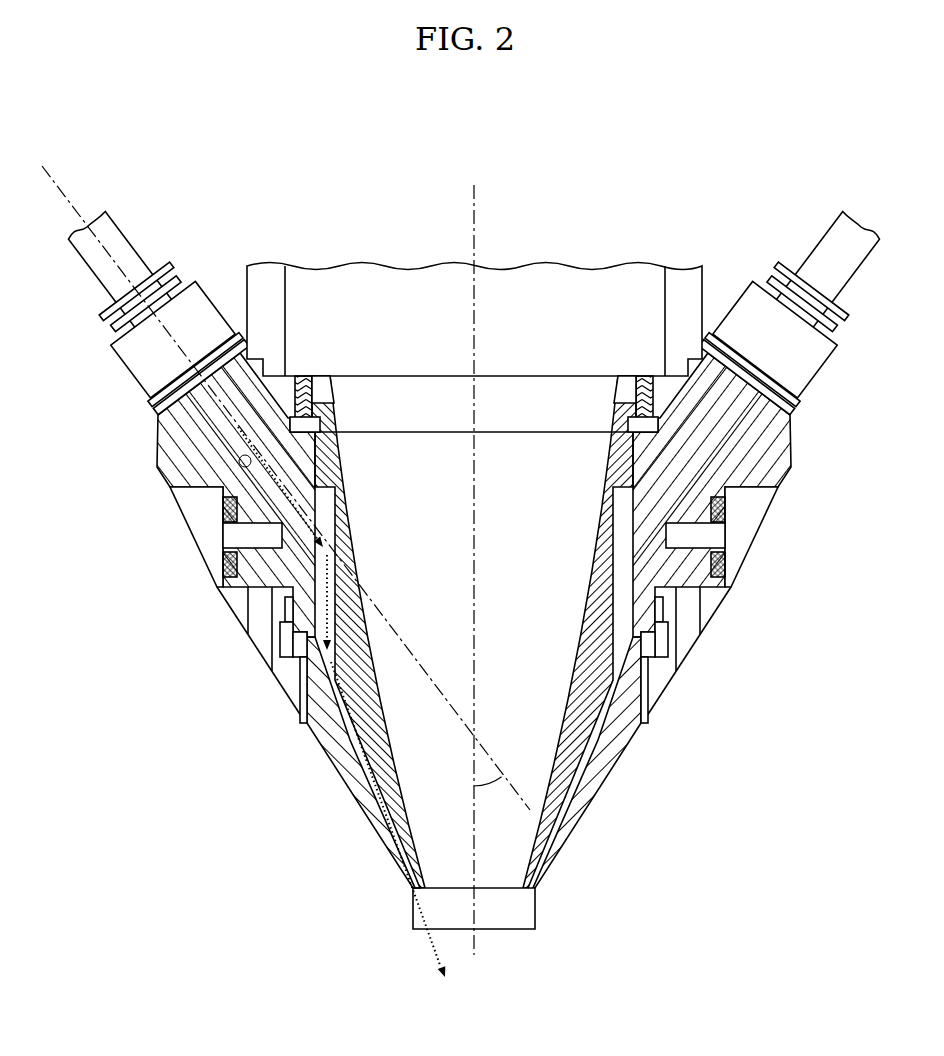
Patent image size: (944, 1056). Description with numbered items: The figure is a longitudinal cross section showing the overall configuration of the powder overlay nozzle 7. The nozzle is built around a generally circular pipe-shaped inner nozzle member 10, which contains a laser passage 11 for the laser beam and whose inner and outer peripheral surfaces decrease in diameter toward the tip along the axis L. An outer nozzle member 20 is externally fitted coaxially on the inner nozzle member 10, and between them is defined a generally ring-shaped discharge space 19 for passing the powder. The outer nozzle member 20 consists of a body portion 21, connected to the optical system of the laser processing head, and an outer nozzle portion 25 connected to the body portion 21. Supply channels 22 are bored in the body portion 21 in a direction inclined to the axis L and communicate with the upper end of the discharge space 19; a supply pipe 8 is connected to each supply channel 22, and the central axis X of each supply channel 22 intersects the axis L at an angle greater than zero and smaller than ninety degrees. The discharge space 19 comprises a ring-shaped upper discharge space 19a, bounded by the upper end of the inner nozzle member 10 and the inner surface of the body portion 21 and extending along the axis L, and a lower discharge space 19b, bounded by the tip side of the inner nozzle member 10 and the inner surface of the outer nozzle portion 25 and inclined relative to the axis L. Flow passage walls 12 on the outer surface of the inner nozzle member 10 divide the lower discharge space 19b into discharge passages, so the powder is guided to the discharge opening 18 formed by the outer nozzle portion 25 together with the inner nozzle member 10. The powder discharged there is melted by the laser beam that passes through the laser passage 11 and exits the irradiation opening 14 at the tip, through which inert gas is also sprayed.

The powder overlay nozzle 7 is at (632, 220).
The supply pipe 8 is at (122, 232).
The inner nozzle member 10 is at (358, 468).
The laser passage 11 is at (390, 742).
The flow passage walls 12 is at (360, 786).
The irradiation opening 14 is at (490, 890).
The discharge opening 18 is at (416, 890).
The discharge space 19 is at (376, 702).
The upper discharge space 19a is at (340, 516).
The lower discharge space 19b is at (376, 652).
The outer nozzle member 20 is at (427, 605).
The body portion 21 is at (247, 585).
The supply channels 22 is at (240, 458).
The outer nozzle portion 25 is at (306, 690).
The axis L is at (478, 194).
The central axis X is at (56, 167).